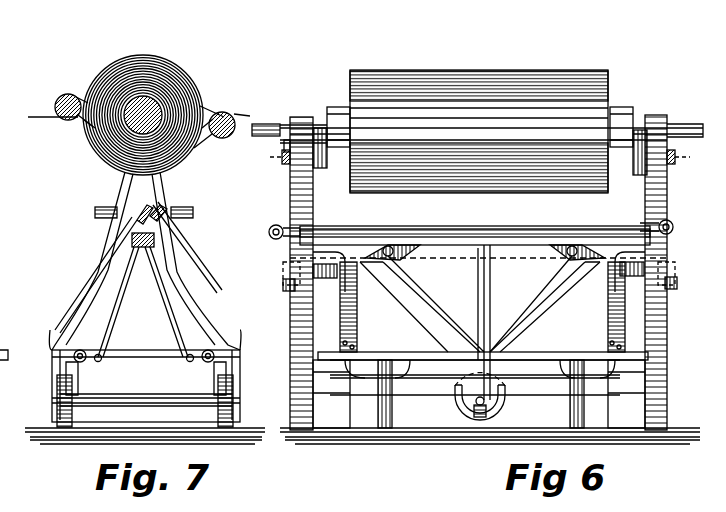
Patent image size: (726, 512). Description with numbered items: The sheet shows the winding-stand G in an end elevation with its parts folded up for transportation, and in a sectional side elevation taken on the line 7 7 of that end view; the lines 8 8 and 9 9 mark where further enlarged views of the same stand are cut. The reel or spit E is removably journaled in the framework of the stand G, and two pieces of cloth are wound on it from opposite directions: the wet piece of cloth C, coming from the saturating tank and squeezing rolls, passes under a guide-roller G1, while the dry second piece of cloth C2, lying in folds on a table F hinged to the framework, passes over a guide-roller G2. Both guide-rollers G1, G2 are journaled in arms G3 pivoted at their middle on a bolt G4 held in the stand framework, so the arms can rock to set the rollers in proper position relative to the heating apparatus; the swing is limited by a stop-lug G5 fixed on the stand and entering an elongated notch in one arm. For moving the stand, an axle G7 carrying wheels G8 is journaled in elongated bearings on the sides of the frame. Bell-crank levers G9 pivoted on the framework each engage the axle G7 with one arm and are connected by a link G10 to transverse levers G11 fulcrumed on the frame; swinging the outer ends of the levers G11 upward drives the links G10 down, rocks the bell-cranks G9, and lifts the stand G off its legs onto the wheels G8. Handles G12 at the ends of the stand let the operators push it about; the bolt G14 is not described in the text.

In FIG. 7, the reel or spit E is at (155, 103).
In FIG. 7, the piece of cloth C is at (35, 124).
In FIG. 7, the second piece of cloth C2 is at (230, 112).
In FIG. 7, the stand G is at (132, 308).
In FIG. 6, the stand G is at (490, 279).
In FIG. 7, the guide-roller G1 is at (69, 94).
In FIG. 7, the guide-roller G2 is at (226, 135).
In FIG. 7, the arms G3 is at (86, 124).
In FIG. 6, the arms G3 is at (340, 178).
In FIG. 6, the bolt G4 is at (675, 157).
In FIG. 6, the stop-lug G5 is at (480, 142).
In FIG. 7, the axle G7 is at (158, 402).
In FIG. 6, the axle G7 is at (470, 403).
In FIG. 7, the wheels G8 is at (216, 413).
In FIG. 6, the wheels G8 is at (505, 400).
In FIG. 7, the bell-crank levers G9 is at (208, 376).
In FIG. 7, the link G10 is at (112, 310).
In FIG. 6, the link G10 is at (488, 302).
In FIG. 7, the levers G11 is at (132, 242).
In FIG. 6, the levers G11 is at (442, 252).
In FIG. 7, the handles G12 is at (195, 213).
In FIG. 6, the handles G12 is at (277, 240).
In FIG. 6, the bolt G14 is at (287, 160).
In FIG. 6, the table F is at (415, 345).
In FIG. 6, the section line 7 7 is at (478, 482).
In FIG. 6, the section line 8 8 is at (632, 205).
In FIG. 7, the section line 9 9 is at (45, 506).